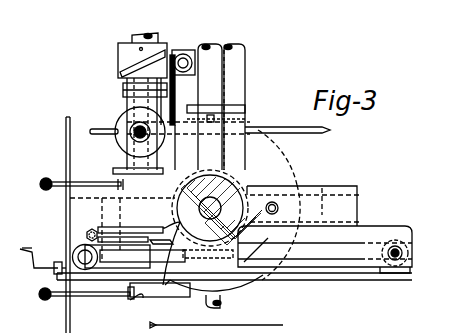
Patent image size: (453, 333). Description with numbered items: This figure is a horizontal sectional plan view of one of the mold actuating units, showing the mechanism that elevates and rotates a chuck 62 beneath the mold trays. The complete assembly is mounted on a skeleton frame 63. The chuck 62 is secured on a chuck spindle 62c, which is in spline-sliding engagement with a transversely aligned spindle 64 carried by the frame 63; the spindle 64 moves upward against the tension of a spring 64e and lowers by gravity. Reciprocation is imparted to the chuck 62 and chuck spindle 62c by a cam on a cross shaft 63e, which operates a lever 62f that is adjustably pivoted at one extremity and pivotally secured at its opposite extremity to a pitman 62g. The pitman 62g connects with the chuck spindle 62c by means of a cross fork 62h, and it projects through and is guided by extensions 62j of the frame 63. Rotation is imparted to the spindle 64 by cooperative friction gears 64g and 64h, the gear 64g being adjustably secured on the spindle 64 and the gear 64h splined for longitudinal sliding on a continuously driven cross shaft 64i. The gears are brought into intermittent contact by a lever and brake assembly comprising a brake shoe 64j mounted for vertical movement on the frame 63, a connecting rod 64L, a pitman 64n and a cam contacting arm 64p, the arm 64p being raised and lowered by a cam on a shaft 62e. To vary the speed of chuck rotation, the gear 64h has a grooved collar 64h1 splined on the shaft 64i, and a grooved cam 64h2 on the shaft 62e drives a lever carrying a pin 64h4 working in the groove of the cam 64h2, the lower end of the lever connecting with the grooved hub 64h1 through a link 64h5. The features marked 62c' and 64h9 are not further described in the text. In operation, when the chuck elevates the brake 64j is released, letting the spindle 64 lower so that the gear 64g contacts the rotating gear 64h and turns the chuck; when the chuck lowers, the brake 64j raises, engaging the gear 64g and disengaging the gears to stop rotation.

The chuck 62 is at (225, 327).
The foot 62c' is at (241, 319).
The chuck spindle 62c is at (141, 304).
The shaft 62e is at (246, 176).
The lever 62f is at (330, 275).
The pitman 62g is at (392, 262).
The cross fork 62h is at (325, 251).
The extensions of the frame 62j is at (408, 218).
The skeleton frame 63 is at (357, 186).
The cross shaft 63e is at (186, 147).
The spindle 64 is at (217, 208).
The spring 64e is at (161, 244).
The friction gear 64g is at (290, 167).
The friction gear 64h is at (330, 130).
The grooved collar 64h1 is at (228, 113).
The grooved cam 64h2 is at (118, 52).
The pin 64h4 is at (180, 50).
The link 64h5 is at (127, 100).
The tab 64h9 is at (152, 27).
The cross shaft 64i is at (212, 40).
The brake shoe 64j is at (282, 232).
The connecting rod 64L is at (176, 288).
The pitman 64n is at (91, 230).
The cam contacting arm 64p is at (115, 228).